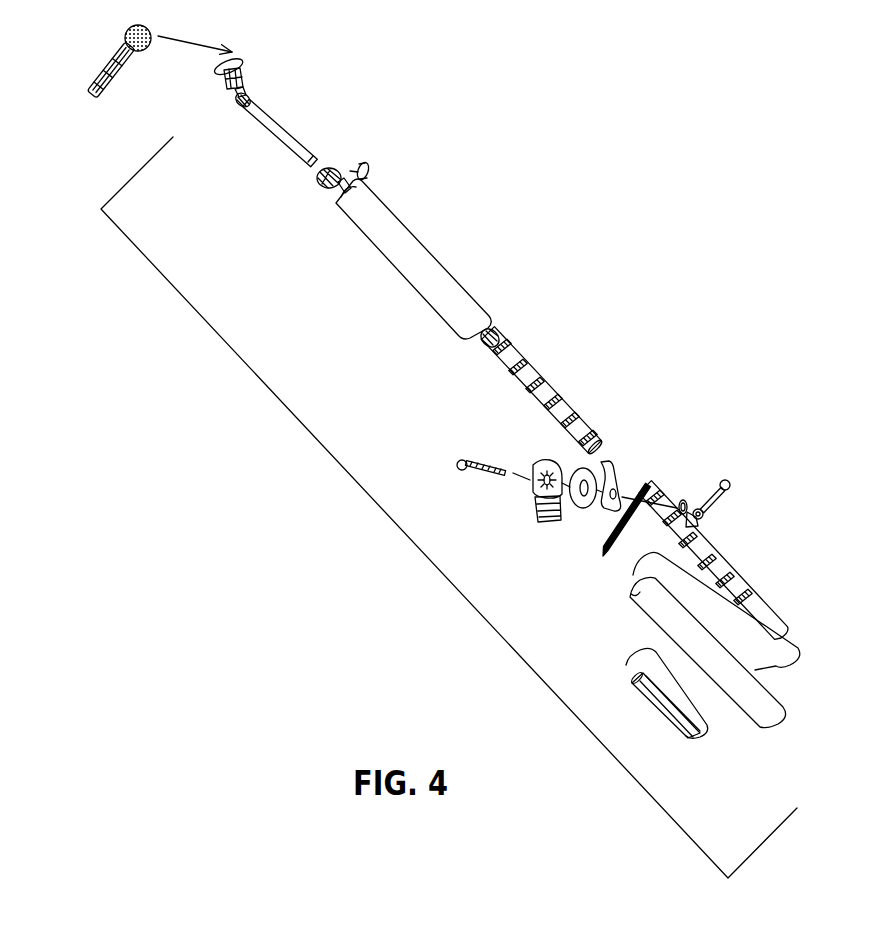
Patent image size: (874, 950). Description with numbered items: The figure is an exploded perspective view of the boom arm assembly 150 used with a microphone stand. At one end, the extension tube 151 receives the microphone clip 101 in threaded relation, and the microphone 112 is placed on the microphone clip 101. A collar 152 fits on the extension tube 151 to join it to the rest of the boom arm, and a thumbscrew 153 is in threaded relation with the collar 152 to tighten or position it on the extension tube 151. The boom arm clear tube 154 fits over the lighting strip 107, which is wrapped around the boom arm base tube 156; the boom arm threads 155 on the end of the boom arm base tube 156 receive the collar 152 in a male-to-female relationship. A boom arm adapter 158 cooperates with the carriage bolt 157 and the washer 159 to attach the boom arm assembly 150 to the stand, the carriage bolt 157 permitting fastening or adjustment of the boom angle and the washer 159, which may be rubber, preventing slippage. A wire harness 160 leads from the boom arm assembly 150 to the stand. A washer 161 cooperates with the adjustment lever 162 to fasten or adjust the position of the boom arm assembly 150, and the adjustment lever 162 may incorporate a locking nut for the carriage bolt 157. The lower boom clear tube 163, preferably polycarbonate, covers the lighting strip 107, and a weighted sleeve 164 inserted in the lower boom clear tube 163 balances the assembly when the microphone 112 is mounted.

The microphone clip 101 is at (208, 72).
The lighting strip 107 is at (522, 358).
The microphone 112 is at (108, 56).
The boom arm assembly 150 is at (412, 545).
The extension tube 151 is at (268, 135).
The collar 152 is at (313, 182).
The thumbscrew 153 is at (370, 168).
The boom arm clear tube 154 is at (384, 258).
The boom arm threads 155 is at (498, 331).
The boom arm base tube 156 is at (538, 400).
The carriage bolt 157 is at (453, 463).
The boom arm adapter 158 is at (532, 503).
The washer 159 is at (578, 513).
The wire harness 160 is at (608, 558).
The washer 161 is at (687, 506).
The adjustment lever 162 is at (733, 490).
The lower boom clear tube 163 is at (782, 705).
The weighted sleeve 164 is at (660, 715).